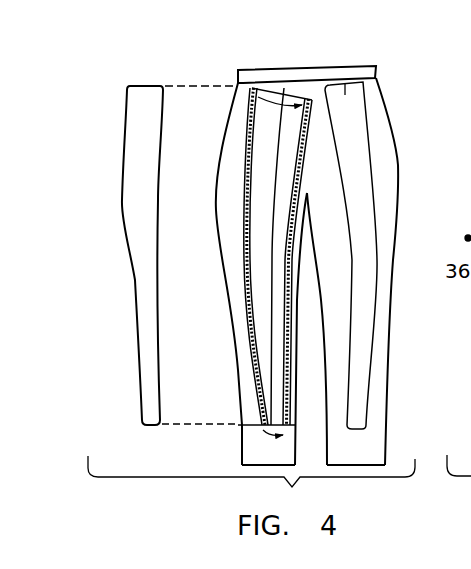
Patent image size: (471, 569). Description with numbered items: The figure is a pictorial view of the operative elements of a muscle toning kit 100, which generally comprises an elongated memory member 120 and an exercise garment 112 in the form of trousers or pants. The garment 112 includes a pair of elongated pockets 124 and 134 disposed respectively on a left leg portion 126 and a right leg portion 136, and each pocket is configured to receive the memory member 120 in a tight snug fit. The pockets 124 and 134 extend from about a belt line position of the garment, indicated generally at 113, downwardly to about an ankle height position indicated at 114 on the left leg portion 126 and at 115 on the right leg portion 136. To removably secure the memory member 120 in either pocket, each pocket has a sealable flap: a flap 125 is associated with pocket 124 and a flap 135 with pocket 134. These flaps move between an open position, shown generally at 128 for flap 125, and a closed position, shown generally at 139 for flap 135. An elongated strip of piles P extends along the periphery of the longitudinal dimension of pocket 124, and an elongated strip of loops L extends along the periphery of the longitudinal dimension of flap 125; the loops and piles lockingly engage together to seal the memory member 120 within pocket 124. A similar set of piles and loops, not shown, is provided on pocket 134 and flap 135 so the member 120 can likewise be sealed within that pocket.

The muscle toning kit 100 is at (238, 482).
The exercise garment 112 is at (400, 165).
The belt line position 113 is at (388, 66).
The ankle height position 114 is at (226, 432).
The ankle height position 115 is at (396, 408).
The elongated memory member 120 is at (133, 170).
The elongated pocket 124 is at (230, 366).
The flap 125 is at (296, 90).
The left leg portion 126 is at (250, 453).
The open position 128 is at (222, 97).
The elongated pocket 134 is at (388, 368).
The flap 135 is at (343, 63).
The right leg portion 136 is at (373, 450).
The closed position 139 is at (404, 228).
The strip of loops L is at (297, 141).
The strip of piles P is at (244, 220).